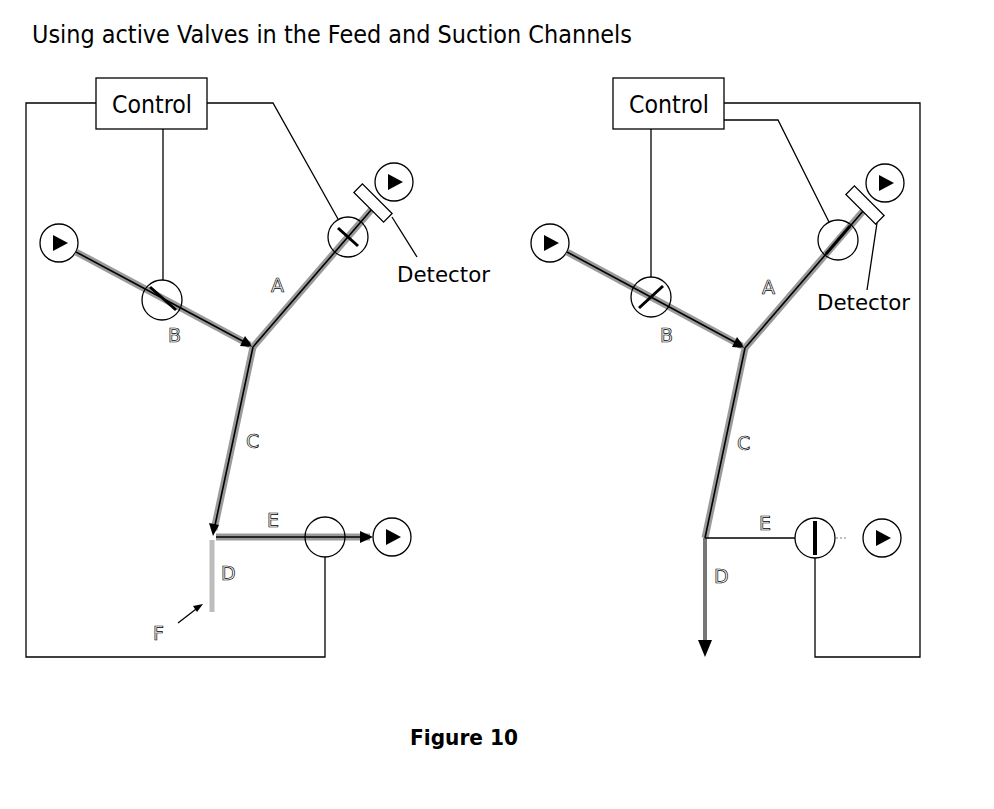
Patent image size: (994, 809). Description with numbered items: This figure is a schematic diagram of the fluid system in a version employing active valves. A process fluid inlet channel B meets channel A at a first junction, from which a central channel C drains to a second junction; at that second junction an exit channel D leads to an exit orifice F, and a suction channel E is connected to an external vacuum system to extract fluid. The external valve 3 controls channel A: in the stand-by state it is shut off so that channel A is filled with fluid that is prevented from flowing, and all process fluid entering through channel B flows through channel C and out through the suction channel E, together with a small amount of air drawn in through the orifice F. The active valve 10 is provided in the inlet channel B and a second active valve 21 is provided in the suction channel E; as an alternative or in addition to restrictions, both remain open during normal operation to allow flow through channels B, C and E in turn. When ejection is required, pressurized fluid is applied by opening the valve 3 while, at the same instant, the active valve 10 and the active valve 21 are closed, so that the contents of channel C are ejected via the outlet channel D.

The external valve 3 is at (314, 220).
The active valve 10 is at (137, 323).
The active valve in channel E 21 is at (329, 503).